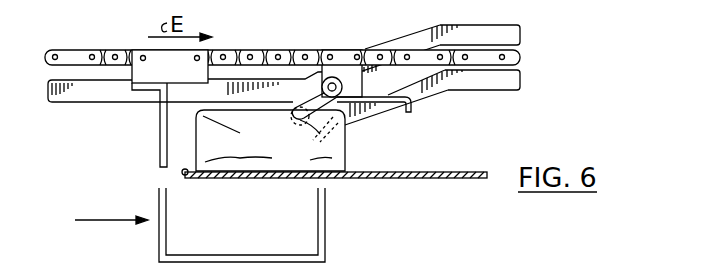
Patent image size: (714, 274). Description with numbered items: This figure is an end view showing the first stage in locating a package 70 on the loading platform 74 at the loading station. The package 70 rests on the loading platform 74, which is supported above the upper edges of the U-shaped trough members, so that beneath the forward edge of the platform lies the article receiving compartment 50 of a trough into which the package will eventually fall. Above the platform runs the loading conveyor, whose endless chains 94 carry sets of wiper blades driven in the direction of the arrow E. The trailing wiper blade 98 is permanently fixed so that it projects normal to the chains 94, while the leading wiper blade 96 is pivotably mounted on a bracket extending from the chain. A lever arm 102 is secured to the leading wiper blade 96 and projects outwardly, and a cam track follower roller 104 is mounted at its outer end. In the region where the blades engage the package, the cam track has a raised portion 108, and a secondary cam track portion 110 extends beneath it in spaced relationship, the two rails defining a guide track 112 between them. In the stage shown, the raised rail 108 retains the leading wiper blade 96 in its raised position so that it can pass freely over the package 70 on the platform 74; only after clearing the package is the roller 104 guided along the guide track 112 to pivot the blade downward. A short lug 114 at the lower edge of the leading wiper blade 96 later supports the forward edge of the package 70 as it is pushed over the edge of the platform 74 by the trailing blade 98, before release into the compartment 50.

The article receiving compartment 50 is at (308, 226).
The package 70 is at (240, 166).
The loading platform 74 is at (368, 179).
The endless chain 94 is at (259, 50).
The leading wiper blade 96 is at (412, 111).
The trailing wiper blade 98 is at (160, 118).
The lever arm 102 is at (322, 83).
The cam track follower roller 104 is at (292, 116).
The raised portion of cam track 108 is at (521, 19).
The secondary cam track portion 110 is at (486, 89).
The guide track 112 is at (392, 72).
The lug 114 is at (414, 115).